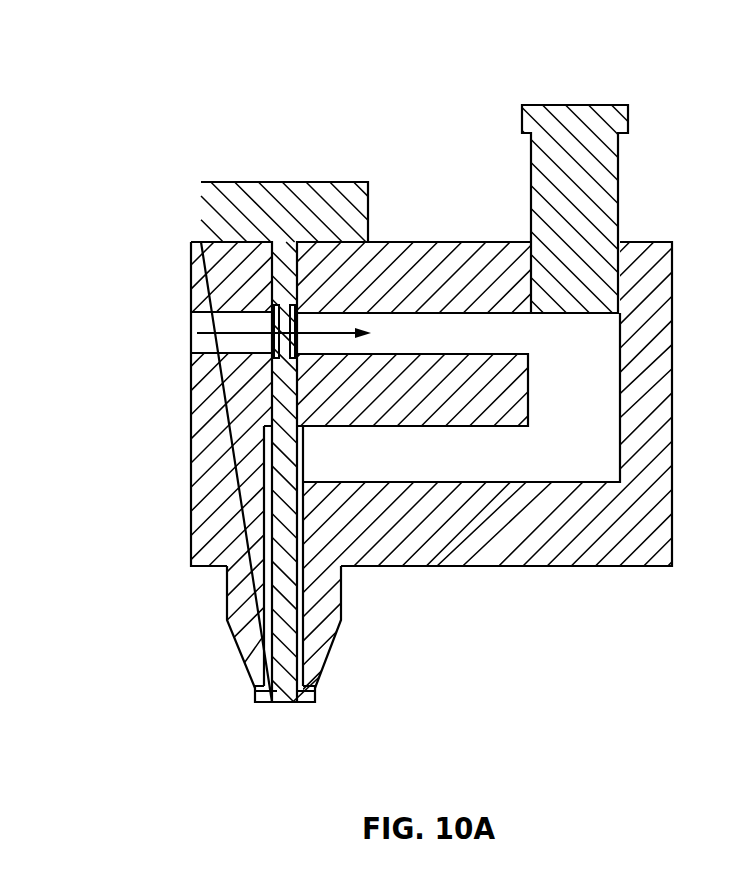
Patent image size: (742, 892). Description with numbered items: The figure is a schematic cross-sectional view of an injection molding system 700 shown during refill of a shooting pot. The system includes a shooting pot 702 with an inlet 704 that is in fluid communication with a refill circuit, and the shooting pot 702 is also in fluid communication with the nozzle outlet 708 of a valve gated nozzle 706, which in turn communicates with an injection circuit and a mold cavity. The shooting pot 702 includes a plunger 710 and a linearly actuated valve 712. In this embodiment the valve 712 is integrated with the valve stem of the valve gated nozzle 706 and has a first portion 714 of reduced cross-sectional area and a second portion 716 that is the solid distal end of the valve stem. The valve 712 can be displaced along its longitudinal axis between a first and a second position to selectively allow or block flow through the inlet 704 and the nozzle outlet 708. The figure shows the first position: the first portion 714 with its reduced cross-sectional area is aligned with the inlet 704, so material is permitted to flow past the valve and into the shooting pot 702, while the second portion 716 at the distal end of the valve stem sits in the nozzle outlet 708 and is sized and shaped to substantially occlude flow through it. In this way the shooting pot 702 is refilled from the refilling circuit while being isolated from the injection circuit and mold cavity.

The injection molding system 700 is at (194, 86).
The shooting pot 702 is at (572, 447).
The inlet 704 is at (190, 333).
The valve gated nozzle 706 is at (341, 622).
The nozzle outlet 708 is at (314, 688).
The plunger 710 is at (522, 119).
The linearly actuated valve 712 is at (201, 210).
The first portion 714 is at (275, 322).
The second portion 716 is at (255, 688).